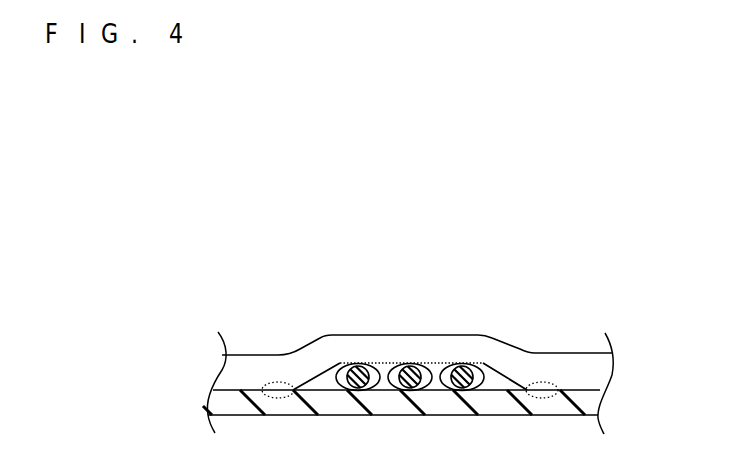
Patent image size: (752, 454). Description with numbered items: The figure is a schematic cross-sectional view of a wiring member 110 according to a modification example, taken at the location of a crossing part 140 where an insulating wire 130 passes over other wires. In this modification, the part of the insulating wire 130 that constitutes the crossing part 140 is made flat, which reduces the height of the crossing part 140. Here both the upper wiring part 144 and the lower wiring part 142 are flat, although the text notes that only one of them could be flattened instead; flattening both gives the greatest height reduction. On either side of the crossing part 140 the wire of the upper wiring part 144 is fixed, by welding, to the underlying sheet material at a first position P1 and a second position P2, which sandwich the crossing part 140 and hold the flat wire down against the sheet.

The wiring member 110 is at (261, 184).
The insulating wire 130 is at (487, 368).
The crossing part 140 is at (483, 264).
The lower wiring part 142 is at (358, 363).
The upper wiring part 144 is at (416, 368).
The first position P1 is at (275, 378).
The second position P2 is at (545, 380).